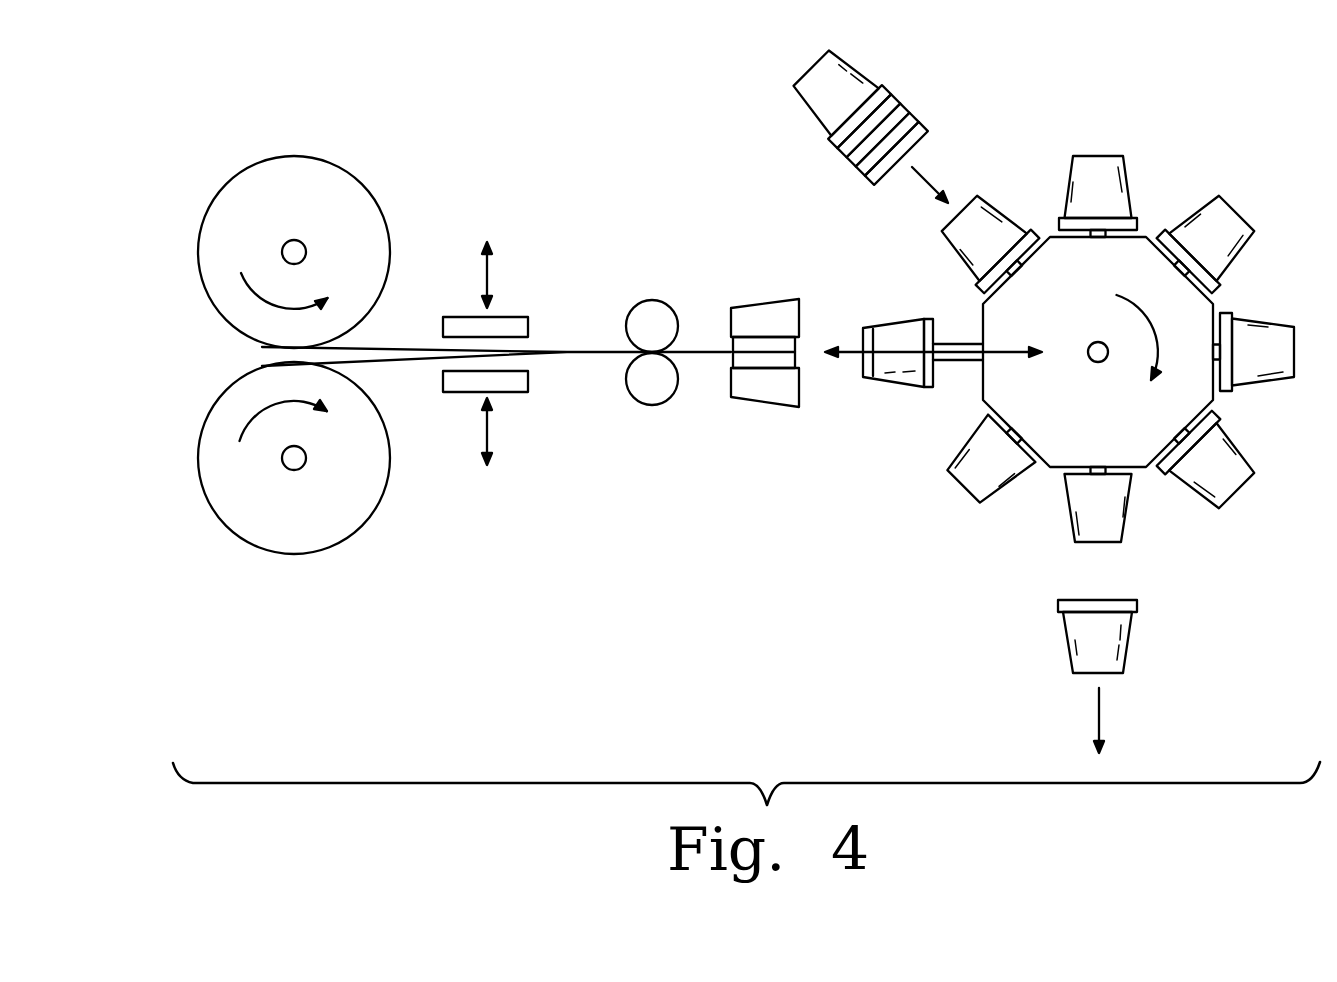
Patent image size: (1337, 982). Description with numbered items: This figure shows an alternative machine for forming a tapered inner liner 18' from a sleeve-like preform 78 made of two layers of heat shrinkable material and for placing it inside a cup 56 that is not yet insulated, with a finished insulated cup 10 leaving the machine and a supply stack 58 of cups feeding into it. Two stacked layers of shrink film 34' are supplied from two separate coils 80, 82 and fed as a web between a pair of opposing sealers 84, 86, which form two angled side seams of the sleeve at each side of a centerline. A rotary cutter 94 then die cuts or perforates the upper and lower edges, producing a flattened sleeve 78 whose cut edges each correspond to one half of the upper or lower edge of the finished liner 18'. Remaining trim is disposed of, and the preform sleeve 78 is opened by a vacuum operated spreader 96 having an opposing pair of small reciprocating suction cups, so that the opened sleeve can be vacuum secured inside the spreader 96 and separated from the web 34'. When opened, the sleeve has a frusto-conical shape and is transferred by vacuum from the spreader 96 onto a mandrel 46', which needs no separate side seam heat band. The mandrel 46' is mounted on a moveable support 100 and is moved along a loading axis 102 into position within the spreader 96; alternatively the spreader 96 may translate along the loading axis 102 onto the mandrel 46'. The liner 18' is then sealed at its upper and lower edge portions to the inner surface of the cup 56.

The finished cup 10 is at (1131, 642).
The tapered inner liner 18' is at (965, 242).
The shrink film 34' is at (498, 310).
The mandrel 46' is at (967, 466).
The cup 56 is at (1131, 186).
The stack of cups 58 is at (866, 78).
The sleeve-like preform 78 is at (895, 335).
The coil 80 is at (249, 160).
The coil 82 is at (226, 526).
The sealer 84 is at (529, 325).
The sealer 86 is at (529, 380).
The rotary cutter 94 is at (655, 438).
The vacuum operated spreader 96 is at (766, 438).
The moveable support 100 is at (950, 341).
The loading axis 102 is at (1007, 349).